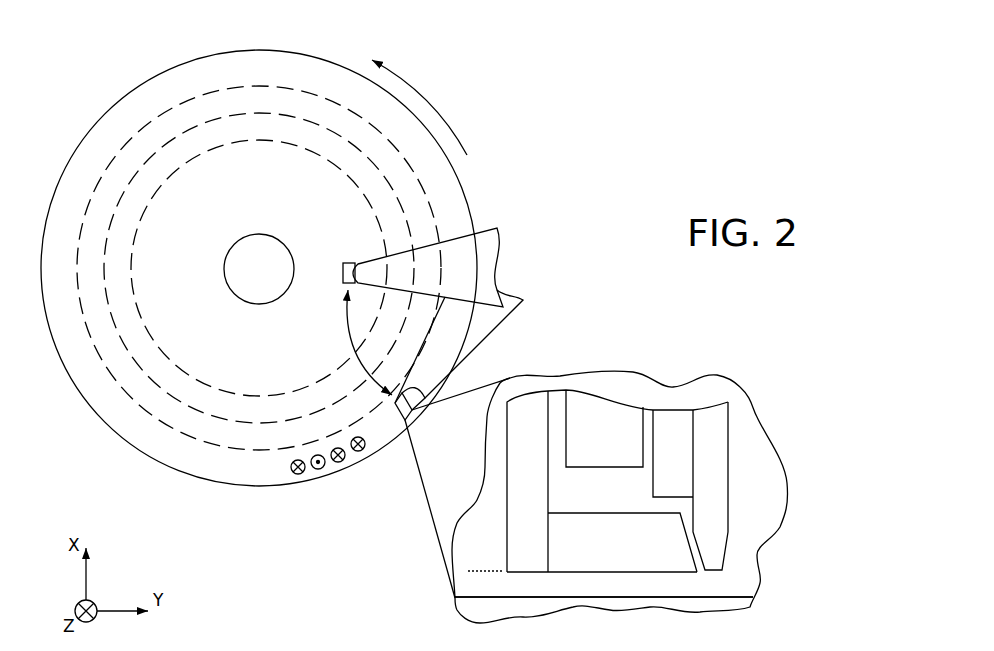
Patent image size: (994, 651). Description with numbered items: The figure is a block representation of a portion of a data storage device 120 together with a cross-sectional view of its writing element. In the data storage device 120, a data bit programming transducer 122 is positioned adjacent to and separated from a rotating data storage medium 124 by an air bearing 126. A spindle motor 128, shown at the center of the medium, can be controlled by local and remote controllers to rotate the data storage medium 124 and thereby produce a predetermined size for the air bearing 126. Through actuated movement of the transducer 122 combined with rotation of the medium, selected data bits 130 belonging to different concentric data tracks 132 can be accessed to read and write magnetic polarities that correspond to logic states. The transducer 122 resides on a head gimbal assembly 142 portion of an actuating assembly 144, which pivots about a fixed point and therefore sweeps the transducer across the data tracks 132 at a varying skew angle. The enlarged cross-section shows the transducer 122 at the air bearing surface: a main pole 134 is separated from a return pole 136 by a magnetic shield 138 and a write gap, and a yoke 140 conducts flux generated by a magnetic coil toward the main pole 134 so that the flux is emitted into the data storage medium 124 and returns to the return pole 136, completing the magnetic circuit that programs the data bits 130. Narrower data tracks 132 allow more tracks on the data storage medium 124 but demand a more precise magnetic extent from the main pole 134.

The data storage device 120 is at (598, 72).
The data bit programming transducer 122 is at (620, 487).
The data storage medium 124 is at (86, 400).
The air bearing 126 is at (730, 583).
The spindle motor 128 is at (262, 233).
The data bits 130 is at (344, 470).
The data tracks 132 is at (142, 170).
The main pole 134 is at (730, 512).
The return pole 136 is at (546, 514).
The magnetic shield 138 is at (636, 552).
The yoke 140 is at (688, 464).
The head gimbal assembly 142 is at (348, 261).
The actuating assembly 144 is at (436, 281).